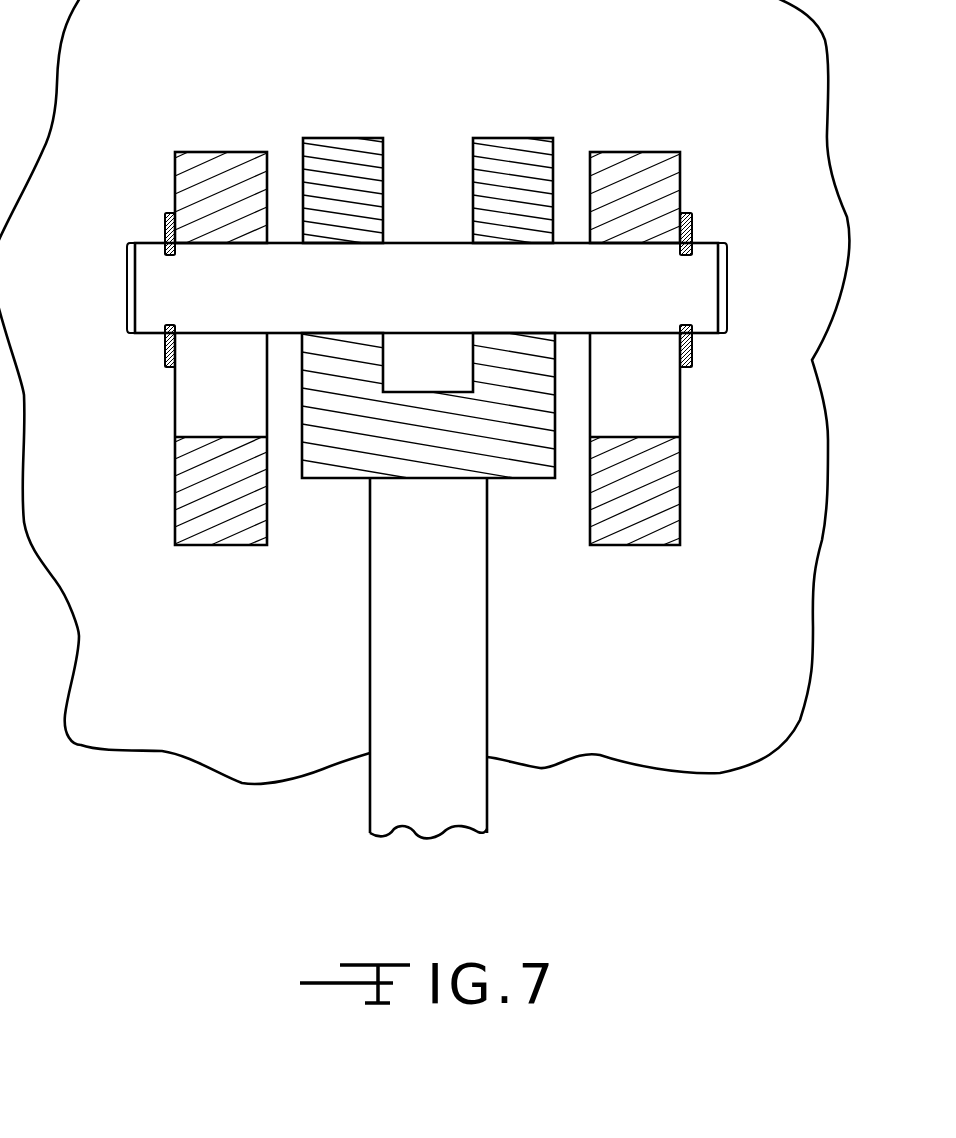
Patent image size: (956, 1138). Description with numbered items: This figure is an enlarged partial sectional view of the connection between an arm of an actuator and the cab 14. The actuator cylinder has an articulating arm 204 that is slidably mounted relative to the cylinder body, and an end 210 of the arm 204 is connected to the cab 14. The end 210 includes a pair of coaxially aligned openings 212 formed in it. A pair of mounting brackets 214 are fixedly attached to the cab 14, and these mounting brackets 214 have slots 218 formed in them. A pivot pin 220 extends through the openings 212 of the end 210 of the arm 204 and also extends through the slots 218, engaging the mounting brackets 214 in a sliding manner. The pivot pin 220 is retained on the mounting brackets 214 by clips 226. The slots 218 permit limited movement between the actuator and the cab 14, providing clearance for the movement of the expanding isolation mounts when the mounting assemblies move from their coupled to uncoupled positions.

The cab 14 is at (793, 667).
The articulating arm 204 is at (458, 806).
The end of the arm 210 is at (520, 478).
The coaxially aligned openings 212 is at (358, 243).
The mounting brackets 214 is at (213, 152).
The slots 218 is at (212, 437).
The pivot pin 220 is at (695, 288).
The clips 226 is at (165, 230).